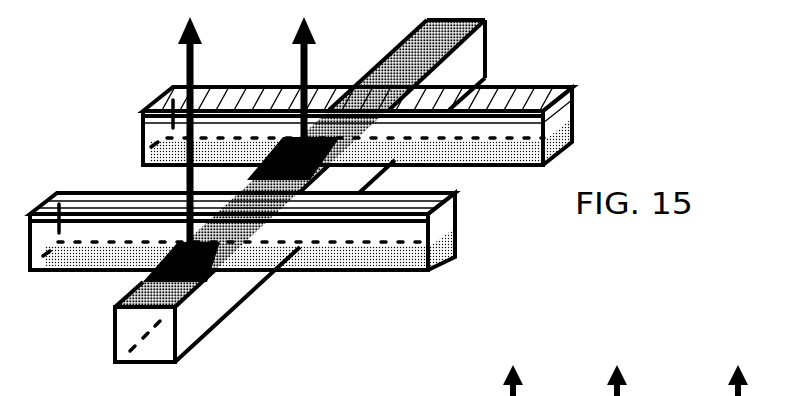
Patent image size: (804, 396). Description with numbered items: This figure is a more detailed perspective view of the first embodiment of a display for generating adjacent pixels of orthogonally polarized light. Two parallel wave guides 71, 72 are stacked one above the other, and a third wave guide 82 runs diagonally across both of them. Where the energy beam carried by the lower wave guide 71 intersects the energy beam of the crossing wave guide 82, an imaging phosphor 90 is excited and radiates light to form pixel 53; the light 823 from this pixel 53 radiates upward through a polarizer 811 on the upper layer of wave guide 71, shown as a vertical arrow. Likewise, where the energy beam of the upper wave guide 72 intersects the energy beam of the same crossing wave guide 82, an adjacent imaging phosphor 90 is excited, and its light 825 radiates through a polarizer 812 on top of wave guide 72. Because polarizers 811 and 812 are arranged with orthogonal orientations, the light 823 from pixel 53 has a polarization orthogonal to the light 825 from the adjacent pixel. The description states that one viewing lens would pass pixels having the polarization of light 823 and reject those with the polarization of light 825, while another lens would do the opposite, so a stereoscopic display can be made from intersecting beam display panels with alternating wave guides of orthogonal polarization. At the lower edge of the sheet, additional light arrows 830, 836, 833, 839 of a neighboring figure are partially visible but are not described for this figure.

The wave guide 72 is at (568, 110).
The polarizer 812 is at (160, 97).
The wave guide 71 is at (441, 216).
The polarizer 811 is at (142, 188).
The pixel 53 is at (270, 271).
The wave guide 82 is at (150, 348).
The imaging phosphor 90 is at (143, 278).
The light 823 is at (187, 63).
The light 825 is at (300, 62).
The current arrow 830 is at (500, 393).
The current arrow 836 is at (601, 393).
The current arrow 833 is at (733, 394).
The current arrow 839 is at (781, 387).